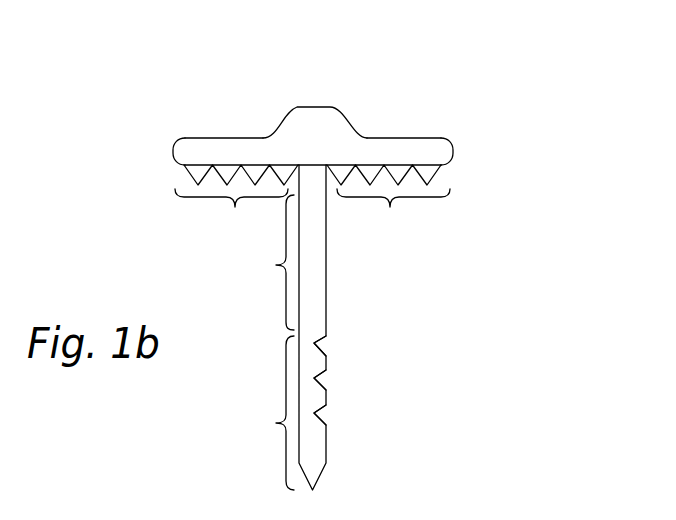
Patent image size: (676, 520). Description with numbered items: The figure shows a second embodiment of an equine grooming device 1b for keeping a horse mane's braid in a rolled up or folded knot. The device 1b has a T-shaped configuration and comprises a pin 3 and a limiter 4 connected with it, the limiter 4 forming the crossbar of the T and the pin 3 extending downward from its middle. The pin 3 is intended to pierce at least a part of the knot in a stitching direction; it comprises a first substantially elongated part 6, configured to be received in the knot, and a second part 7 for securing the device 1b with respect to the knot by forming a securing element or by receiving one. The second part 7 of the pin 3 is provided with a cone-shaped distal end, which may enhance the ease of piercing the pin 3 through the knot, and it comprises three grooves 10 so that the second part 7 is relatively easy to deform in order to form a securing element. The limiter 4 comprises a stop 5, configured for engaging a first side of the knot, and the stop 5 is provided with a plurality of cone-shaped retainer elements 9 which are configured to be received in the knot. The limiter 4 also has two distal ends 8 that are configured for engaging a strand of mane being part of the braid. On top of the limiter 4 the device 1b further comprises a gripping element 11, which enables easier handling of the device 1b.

The equine grooming device 1b is at (470, 67).
The pin 3 is at (331, 300).
The limiter 4 is at (400, 132).
The stop 5 is at (312, 214).
The first substantially elongated part 6 is at (272, 262).
The second part 7 is at (274, 413).
The distal ends 8 is at (170, 147).
The retainer elements 9 is at (230, 168).
The grooves 10 is at (316, 343).
The gripping element 11 is at (313, 122).